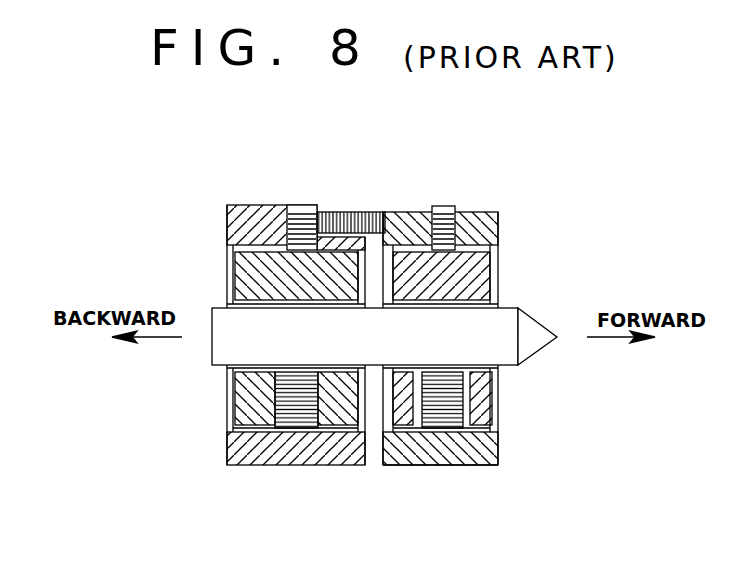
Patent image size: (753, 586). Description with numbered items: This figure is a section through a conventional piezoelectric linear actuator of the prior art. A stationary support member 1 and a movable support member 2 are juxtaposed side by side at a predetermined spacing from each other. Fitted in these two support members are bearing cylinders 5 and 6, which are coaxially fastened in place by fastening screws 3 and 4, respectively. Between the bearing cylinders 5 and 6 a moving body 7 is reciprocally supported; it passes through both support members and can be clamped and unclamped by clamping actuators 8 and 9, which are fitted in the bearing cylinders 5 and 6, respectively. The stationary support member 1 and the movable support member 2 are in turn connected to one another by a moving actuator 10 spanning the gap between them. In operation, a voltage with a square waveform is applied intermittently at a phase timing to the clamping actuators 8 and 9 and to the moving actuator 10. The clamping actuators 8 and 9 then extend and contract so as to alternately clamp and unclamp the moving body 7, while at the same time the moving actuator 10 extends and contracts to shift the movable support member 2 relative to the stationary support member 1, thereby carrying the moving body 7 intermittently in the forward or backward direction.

The stationary support member 1 is at (295, 455).
The movable support member 2 is at (483, 447).
The fastening screw 3 is at (297, 209).
The fastening screw 4 is at (446, 208).
The bearing cylinder 5 is at (247, 263).
The bearing cylinder 6 is at (487, 265).
The moving body 7 is at (532, 345).
The clamping actuator 8 is at (270, 413).
The clamping actuator 9 is at (443, 423).
The moving actuator 10 is at (361, 212).